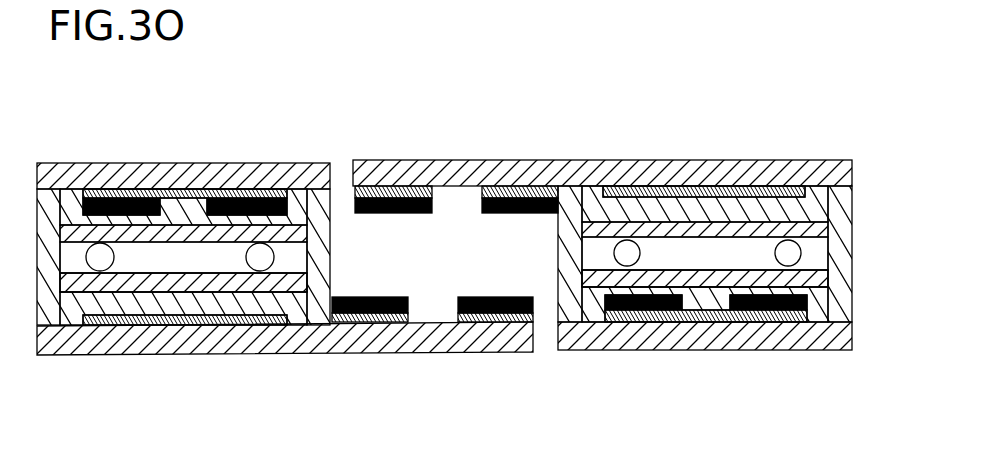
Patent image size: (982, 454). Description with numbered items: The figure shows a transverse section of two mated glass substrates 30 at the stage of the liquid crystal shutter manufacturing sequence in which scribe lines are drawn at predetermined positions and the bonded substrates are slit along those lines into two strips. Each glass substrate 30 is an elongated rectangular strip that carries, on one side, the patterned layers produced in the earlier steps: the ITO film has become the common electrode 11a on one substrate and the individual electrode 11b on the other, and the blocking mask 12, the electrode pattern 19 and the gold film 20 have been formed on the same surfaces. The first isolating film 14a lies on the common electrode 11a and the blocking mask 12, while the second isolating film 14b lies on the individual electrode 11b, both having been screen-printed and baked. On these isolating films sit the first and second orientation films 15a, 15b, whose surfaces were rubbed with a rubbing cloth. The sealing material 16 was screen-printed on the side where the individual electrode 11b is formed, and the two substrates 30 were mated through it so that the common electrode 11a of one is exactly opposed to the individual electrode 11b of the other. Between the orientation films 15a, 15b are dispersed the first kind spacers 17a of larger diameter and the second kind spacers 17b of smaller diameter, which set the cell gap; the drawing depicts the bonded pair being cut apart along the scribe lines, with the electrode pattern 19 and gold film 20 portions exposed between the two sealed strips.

The common electrode 11a is at (178, 218).
The individual electrode 11b is at (113, 318).
The blocking mask 12 is at (229, 232).
The first isolating film 14a is at (292, 217).
The second isolating film 14b is at (297, 306).
The first orientation film 15a is at (109, 206).
The second orientation film 15b is at (190, 290).
The sealing material 16 is at (55, 213).
The first kind spacers 17a is at (100, 257).
The second kind spacers 17b is at (259, 257).
The electrode pattern 19 is at (400, 190).
The gold film 20 is at (367, 297).
The glass substrate 30 is at (133, 172).